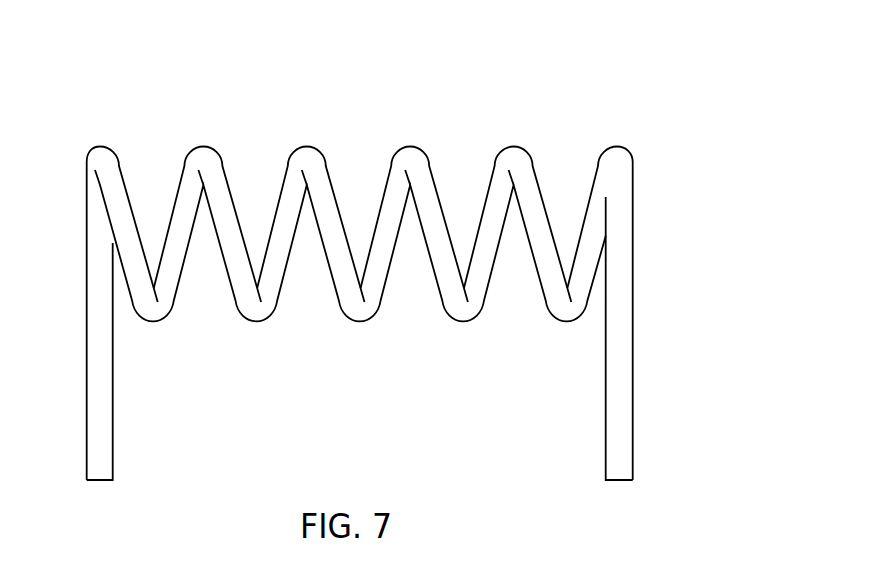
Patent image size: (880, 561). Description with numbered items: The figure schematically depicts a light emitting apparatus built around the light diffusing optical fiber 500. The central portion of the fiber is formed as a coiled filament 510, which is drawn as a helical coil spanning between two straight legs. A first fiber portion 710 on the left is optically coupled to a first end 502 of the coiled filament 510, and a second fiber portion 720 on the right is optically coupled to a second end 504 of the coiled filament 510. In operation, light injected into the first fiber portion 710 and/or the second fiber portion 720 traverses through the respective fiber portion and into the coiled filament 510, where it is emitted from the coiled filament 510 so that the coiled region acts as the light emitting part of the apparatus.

The light diffusing optical fiber 500 is at (622, 96).
The first end 502 is at (97, 250).
The second end 504 is at (608, 297).
The coiled filament 510 is at (636, 175).
The first fiber portion 710 is at (95, 403).
The second fiber portion 720 is at (620, 383).